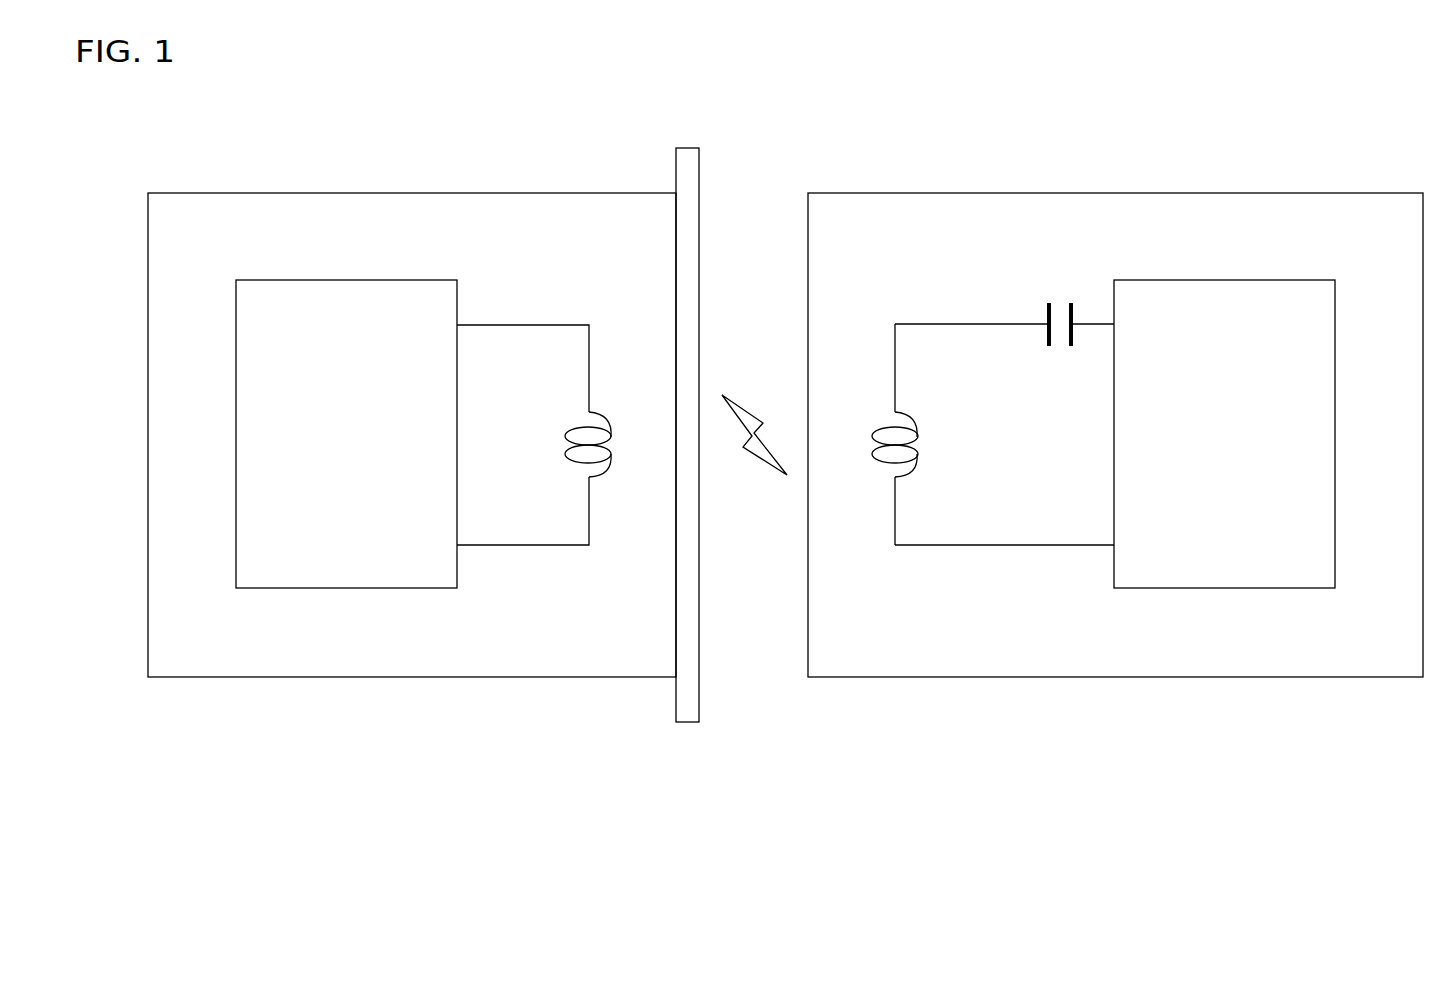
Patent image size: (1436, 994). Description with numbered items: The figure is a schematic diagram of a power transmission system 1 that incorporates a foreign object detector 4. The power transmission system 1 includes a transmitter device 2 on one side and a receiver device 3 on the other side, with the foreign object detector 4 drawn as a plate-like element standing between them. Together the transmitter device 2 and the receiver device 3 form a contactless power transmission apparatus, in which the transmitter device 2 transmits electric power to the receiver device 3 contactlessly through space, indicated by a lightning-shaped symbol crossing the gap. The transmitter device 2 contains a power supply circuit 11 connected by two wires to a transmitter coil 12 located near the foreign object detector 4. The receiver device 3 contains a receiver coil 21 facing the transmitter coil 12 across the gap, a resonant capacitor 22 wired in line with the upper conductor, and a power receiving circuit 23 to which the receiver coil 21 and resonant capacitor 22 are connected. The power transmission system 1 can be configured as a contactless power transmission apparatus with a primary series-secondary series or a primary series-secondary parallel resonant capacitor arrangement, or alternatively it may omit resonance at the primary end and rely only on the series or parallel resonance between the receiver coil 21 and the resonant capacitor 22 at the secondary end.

The power transmission system 1 is at (1252, 772).
The transmitter device 2 is at (543, 678).
The receiver device 3 is at (1292, 678).
The foreign object detector 4 is at (699, 698).
The power supply circuit 11 is at (282, 590).
The transmitter coil 12 is at (605, 478).
The receiver coil 21 is at (875, 462).
The resonant capacitor 22 is at (1060, 298).
The power receiving circuit 23 is at (1290, 590).